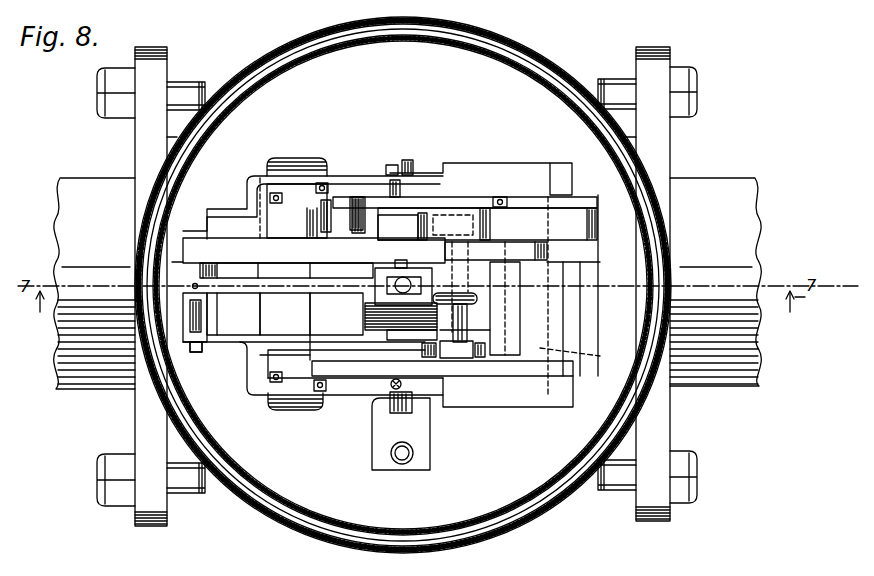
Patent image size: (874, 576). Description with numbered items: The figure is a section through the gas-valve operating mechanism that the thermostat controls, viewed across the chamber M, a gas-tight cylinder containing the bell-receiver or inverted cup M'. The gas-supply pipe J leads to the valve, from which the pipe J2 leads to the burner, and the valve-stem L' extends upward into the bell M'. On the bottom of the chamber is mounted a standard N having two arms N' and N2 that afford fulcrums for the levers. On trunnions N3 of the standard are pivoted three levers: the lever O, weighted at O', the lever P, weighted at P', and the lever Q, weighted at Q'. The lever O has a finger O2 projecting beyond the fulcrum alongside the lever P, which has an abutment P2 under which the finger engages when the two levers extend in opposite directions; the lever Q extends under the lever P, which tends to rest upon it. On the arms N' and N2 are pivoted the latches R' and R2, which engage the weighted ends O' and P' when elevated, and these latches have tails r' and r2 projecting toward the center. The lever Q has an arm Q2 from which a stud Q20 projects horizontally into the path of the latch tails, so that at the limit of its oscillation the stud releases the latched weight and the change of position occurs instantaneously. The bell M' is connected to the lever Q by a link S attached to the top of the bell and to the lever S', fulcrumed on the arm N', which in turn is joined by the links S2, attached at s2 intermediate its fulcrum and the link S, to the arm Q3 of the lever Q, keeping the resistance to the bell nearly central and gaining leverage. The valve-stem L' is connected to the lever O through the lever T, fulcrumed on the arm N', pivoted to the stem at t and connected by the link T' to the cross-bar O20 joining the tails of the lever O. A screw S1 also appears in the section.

The gas-supply pipe J is at (735, 383).
The pipe J2 is at (80, 386).
The chamber M is at (403, 285).
The bell-receiver M' is at (403, 285).
The arm of standard N' is at (314, 221).
The standard N is at (313, 377).
The arm of standard N2 is at (547, 245).
The trunnions N3 is at (413, 162).
The lever O is at (416, 414).
The weight O' is at (221, 313).
The finger O2 is at (433, 218).
The cross-bar O20 is at (463, 320).
The lever P is at (442, 402).
The weight P' is at (552, 285).
The abutment P2 is at (458, 350).
The lever Q is at (428, 422).
The weight Q' is at (531, 349).
The arm of lever Q Q2 is at (363, 208).
The arm of lever Q Q3 is at (283, 192).
The stud Q20 is at (376, 210).
The latch R' is at (297, 183).
The latch R2 is at (582, 218).
The tail of latch R' r' is at (350, 186).
The tail of latch R2 r2 is at (467, 214).
The link S is at (377, 288).
The lever S' is at (136, 251).
The screw S1 is at (197, 352).
The links S2 is at (297, 160).
The attachment point s2 is at (363, 197).
The lever T is at (285, 326).
The link T' is at (484, 303).
The valve-stem L' is at (373, 314).
The pivot t is at (402, 264).